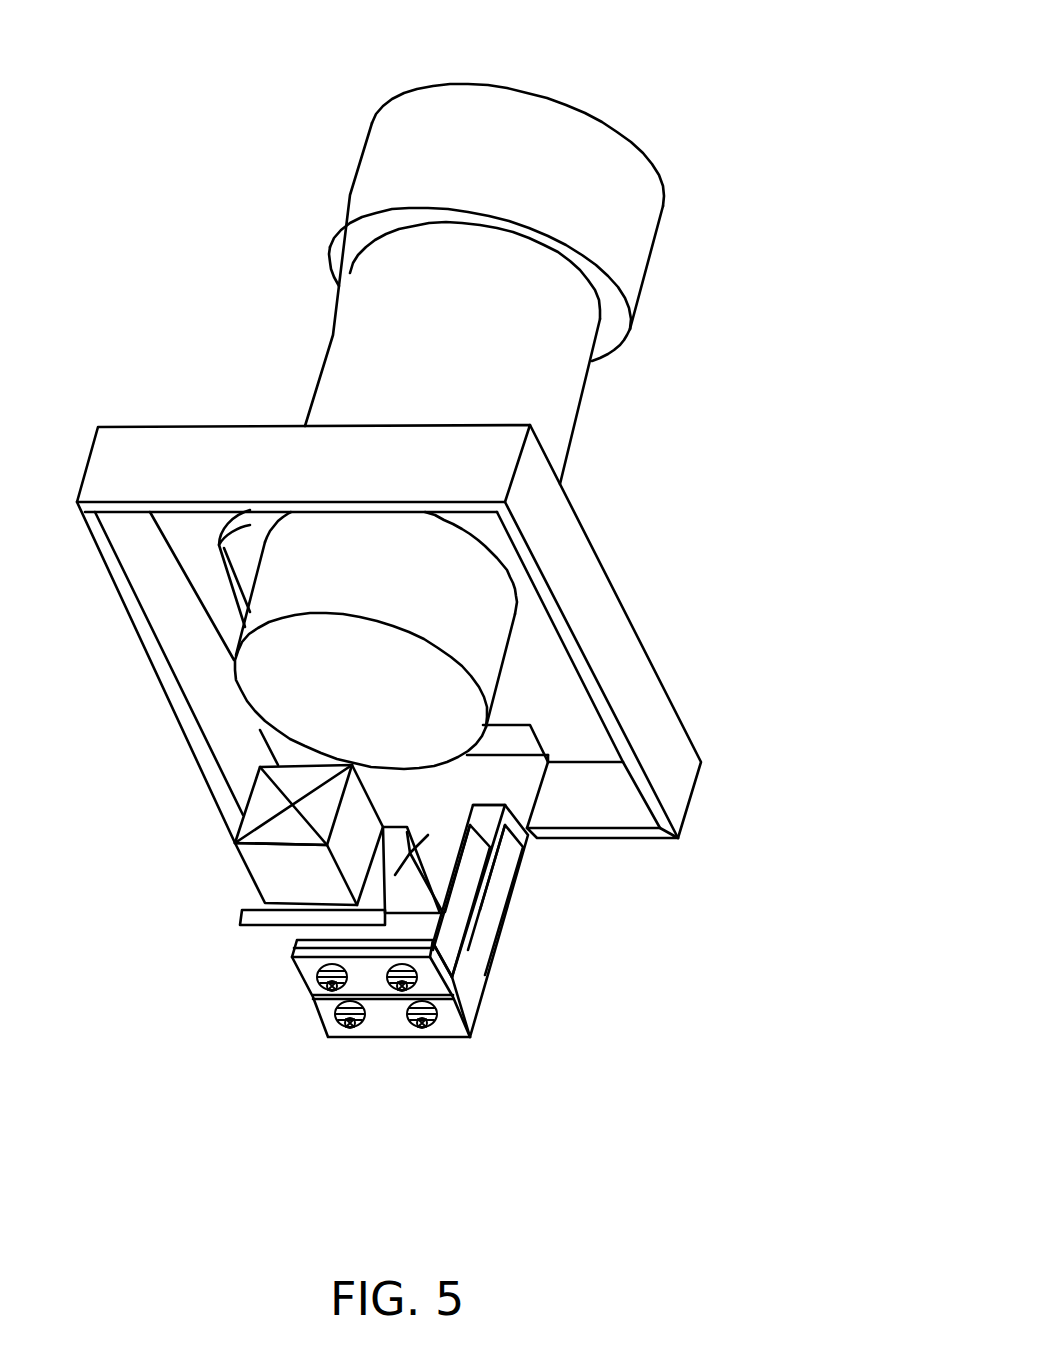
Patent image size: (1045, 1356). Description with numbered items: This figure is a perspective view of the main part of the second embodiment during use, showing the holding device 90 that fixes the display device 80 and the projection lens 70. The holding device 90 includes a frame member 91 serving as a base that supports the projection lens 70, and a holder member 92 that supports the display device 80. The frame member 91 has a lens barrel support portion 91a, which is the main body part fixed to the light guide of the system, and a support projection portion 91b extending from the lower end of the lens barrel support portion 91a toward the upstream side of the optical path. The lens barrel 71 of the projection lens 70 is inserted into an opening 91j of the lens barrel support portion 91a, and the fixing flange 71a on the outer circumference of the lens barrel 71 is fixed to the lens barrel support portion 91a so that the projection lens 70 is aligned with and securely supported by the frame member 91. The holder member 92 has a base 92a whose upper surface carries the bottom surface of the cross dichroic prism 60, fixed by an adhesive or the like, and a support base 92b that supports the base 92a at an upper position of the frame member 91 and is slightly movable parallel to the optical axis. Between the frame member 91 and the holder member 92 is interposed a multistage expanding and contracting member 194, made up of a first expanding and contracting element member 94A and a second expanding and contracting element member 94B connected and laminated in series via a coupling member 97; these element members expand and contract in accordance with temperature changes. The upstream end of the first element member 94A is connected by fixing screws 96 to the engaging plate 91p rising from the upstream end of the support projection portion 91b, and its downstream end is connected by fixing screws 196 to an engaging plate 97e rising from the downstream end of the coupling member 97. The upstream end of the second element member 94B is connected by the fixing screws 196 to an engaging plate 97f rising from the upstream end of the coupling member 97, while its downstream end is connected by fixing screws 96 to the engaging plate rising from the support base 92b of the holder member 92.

The projection lens 70 is at (680, 106).
The lens barrel 71 is at (568, 411).
The fixing flange 71a is at (532, 622).
The holding device 90 is at (694, 466).
The frame member 91 is at (693, 695).
The lens barrel support portion 91a is at (607, 627).
The support projection portion 91b is at (508, 903).
The opening 91j is at (222, 548).
The engaging plate 91p is at (447, 1028).
The holder member 92 is at (208, 947).
The base 92a is at (250, 905).
The support base 92b is at (478, 830).
The first expanding and contracting element member 94A is at (488, 920).
The second expanding and contracting element member 94B is at (458, 915).
The fixing screws 96 is at (422, 1024).
The coupling member 97 is at (487, 870).
The engaging plate 97e is at (517, 832).
The engaging plate 97f is at (433, 980).
The fixing screws 196 is at (350, 1005).
The multistage expanding and contracting member 194 is at (331, 1056).
The cross dichroic prism 60 is at (250, 867).
The display device 80 is at (214, 834).